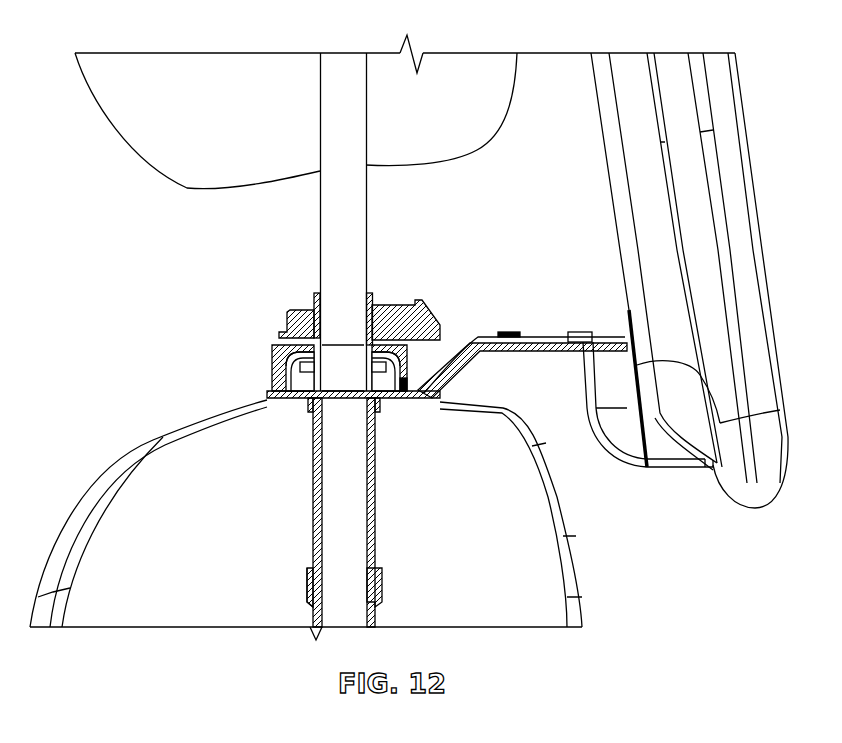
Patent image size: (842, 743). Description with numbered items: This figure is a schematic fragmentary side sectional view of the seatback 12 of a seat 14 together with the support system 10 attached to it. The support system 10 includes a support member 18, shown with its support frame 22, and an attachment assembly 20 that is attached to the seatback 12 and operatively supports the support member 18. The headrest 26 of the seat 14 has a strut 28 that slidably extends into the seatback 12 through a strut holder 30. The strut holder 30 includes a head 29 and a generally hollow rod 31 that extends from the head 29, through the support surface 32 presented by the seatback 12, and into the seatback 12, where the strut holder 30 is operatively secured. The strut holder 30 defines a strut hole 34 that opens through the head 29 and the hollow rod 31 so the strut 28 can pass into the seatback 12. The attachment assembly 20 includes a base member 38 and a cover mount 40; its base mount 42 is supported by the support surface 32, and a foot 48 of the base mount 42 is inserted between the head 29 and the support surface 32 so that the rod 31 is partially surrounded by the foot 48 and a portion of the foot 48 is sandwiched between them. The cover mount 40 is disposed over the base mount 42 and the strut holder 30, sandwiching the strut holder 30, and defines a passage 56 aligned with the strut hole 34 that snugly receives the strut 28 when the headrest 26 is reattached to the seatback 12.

The support system 10 is at (523, 209).
The seatback 12 is at (190, 418).
The seat 14 is at (172, 62).
The support member 18 is at (675, 63).
The attachment assembly 20 is at (236, 329).
The support frame 22 is at (716, 62).
The headrest 26 is at (130, 128).
The strut 28 is at (335, 495).
The head 29 is at (393, 357).
The strut holder 30 is at (273, 376).
The hollow rod 31 is at (315, 558).
The support surface 32 is at (419, 390).
The strut hole 34 is at (337, 374).
The base member 38 is at (412, 400).
The cover mount 40 is at (290, 310).
The base mount 42 is at (297, 400).
The foot 48 is at (297, 372).
The passage 56 is at (329, 278).